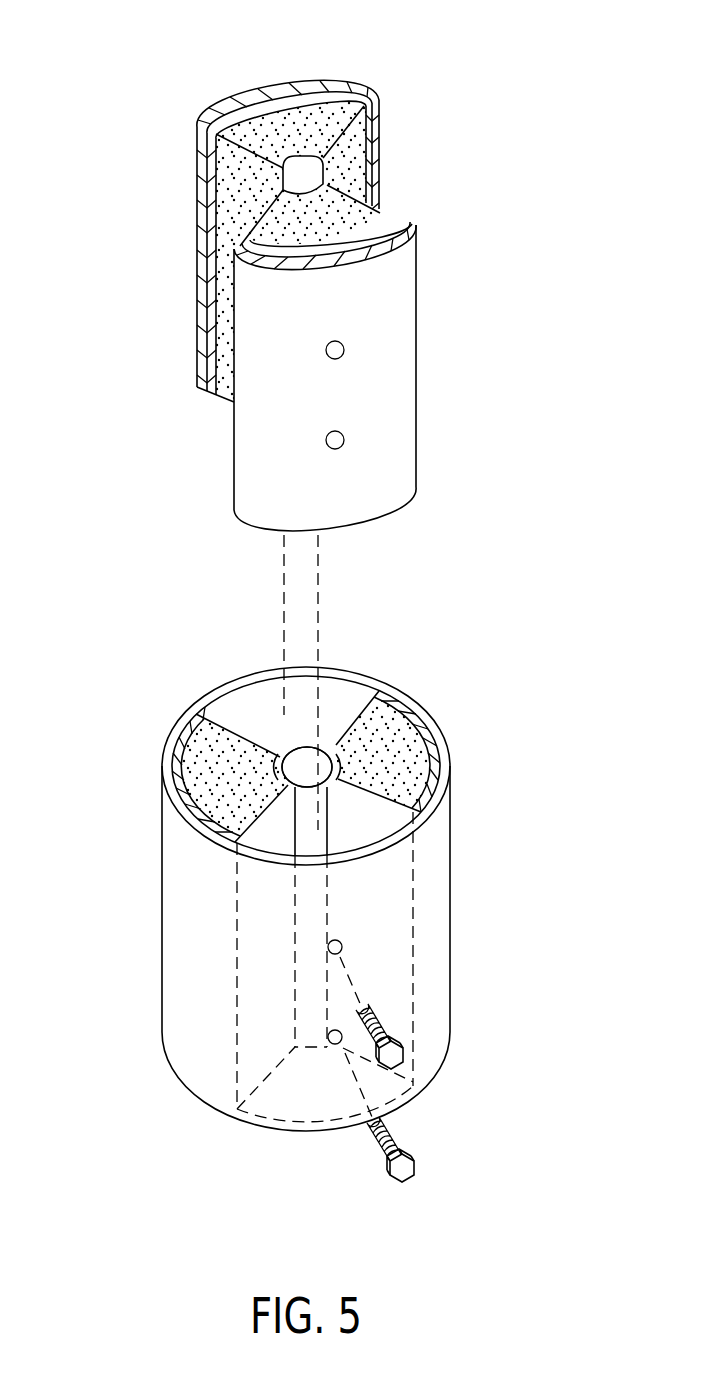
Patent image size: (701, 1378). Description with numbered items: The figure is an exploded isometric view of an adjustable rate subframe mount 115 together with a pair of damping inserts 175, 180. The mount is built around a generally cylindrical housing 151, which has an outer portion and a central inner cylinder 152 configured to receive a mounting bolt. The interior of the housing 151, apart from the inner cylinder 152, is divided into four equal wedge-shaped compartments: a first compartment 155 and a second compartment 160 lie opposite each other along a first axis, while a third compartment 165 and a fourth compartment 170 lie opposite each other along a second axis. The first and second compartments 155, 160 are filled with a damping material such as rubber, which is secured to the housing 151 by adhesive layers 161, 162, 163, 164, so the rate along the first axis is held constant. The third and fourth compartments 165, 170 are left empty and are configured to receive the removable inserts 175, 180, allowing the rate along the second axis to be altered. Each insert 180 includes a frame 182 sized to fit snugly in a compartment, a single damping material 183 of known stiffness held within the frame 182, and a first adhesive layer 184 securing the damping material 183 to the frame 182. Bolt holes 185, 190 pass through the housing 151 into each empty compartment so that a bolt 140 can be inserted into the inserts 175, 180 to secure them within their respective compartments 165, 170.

The subframe mount 115 is at (299, 853).
The bolt 140 is at (414, 1063).
The housing 151 is at (178, 810).
The inner cylinder 152 is at (306, 770).
The first compartment 155 is at (405, 760).
The second compartment 160 is at (207, 747).
The adhesive layer 161 is at (427, 757).
The adhesive layer 162 is at (336, 758).
The adhesive layer 163 is at (283, 763).
The adhesive layer 164 is at (180, 792).
The third compartment 165 is at (356, 698).
The fourth compartment 170 is at (370, 817).
The insert 175 is at (281, 87).
The insert 180 is at (343, 263).
The frame 182 is at (210, 120).
The damping material 183 is at (360, 96).
The first adhesive layer 184 is at (305, 84).
The bolt hole 185 is at (340, 942).
The bolt hole 190 is at (332, 1044).